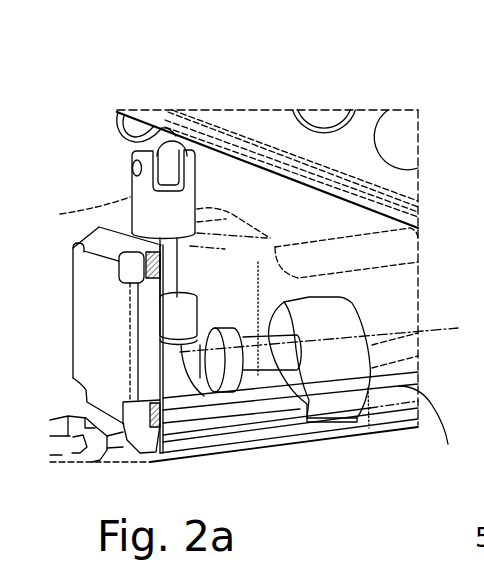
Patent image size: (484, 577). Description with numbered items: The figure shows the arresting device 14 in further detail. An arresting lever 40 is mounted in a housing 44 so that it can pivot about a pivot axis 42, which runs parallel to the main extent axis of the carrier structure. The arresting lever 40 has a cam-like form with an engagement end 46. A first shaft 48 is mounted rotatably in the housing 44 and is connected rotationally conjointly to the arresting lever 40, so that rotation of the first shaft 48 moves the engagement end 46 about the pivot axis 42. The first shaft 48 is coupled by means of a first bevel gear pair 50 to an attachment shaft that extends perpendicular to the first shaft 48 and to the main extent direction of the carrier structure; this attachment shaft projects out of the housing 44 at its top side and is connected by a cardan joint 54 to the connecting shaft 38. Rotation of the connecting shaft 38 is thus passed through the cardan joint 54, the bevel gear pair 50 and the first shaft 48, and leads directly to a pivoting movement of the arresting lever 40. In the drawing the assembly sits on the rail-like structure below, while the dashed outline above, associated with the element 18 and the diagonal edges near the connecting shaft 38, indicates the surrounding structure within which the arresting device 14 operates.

The arresting device 14 is at (340, 449).
The panel / cover plate 18 is at (278, 118).
The connecting shaft 38 is at (128, 110).
The arresting lever 40 is at (327, 325).
The pivot axis 42 is at (432, 330).
The housing 44 is at (270, 240).
The engagement end 46 is at (385, 386).
The first shaft 48 is at (270, 318).
The first bevel gear pair 50 is at (208, 312).
The cardan joint 54 is at (142, 200).